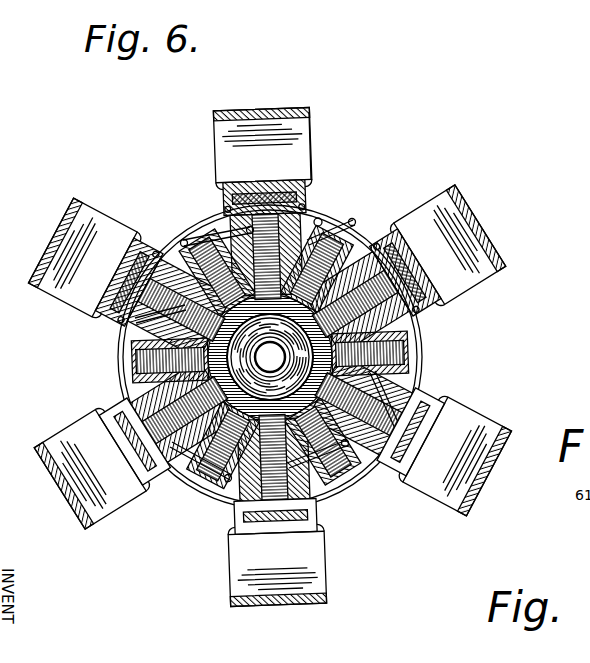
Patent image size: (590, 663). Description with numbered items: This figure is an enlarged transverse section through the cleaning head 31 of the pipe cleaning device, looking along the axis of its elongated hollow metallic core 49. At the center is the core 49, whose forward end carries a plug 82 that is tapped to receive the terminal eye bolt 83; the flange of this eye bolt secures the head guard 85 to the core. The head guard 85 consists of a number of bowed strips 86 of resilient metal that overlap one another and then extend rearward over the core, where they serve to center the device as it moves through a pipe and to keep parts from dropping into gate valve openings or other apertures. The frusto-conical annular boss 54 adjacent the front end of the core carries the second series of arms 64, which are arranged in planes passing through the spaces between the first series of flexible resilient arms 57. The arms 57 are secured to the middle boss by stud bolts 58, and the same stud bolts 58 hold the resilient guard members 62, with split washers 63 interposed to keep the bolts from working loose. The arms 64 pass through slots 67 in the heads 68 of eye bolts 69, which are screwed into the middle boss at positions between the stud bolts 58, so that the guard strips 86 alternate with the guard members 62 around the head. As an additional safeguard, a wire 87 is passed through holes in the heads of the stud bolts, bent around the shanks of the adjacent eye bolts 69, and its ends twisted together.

The cleaning head 31 is at (305, 341).
The core 49 is at (131, 391).
The annular boss 54 is at (135, 337).
The flexible resilient arms 57 is at (330, 218).
The stud bolts 58 is at (335, 238).
The guard members 62 is at (352, 278).
The split washers 63 is at (220, 478).
The arms 64 is at (256, 190).
The slots 67 is at (225, 210).
The heads 68 is at (225, 196).
The eye bolts 69 is at (315, 228).
The plug 82 is at (262, 357).
The terminal eye bolt 83 is at (270, 357).
The head guard 85 is at (311, 150).
The bowed strips 86 is at (262, 118).
The wire 87 is at (342, 250).